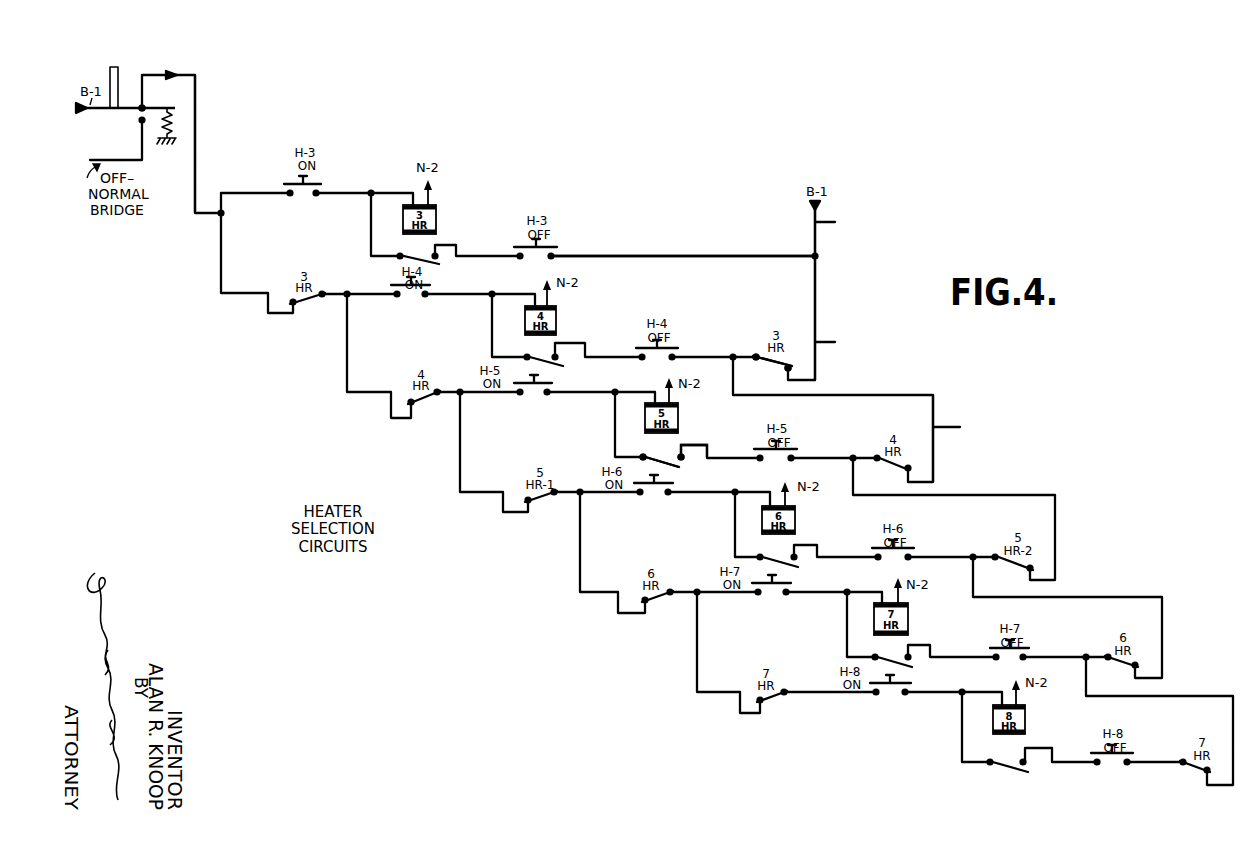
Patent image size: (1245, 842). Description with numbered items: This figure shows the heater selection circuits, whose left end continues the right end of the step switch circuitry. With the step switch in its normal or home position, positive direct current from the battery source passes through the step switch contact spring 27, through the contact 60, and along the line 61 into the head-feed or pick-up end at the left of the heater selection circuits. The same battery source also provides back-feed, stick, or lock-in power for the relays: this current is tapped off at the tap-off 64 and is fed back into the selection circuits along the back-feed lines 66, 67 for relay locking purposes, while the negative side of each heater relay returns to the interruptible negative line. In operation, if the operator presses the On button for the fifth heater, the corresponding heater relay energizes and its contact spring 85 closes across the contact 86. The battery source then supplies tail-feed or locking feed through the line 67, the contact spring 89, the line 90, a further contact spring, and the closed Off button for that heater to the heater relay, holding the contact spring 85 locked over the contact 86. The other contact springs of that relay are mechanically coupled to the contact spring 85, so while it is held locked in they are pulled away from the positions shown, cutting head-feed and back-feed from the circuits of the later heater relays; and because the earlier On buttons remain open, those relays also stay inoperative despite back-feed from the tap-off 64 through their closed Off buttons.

The step switch contact spring 27 is at (127, 111).
The contact 60 is at (147, 105).
The line 61 is at (195, 105).
The B-1 tap-off 64 is at (815, 222).
The back-feed line 66 is at (590, 255).
The back-feed line 67 is at (815, 342).
The contact spring 85 is at (678, 466).
The contact 86 is at (682, 453).
The contact spring 89 is at (771, 367).
The line 90 is at (933, 427).